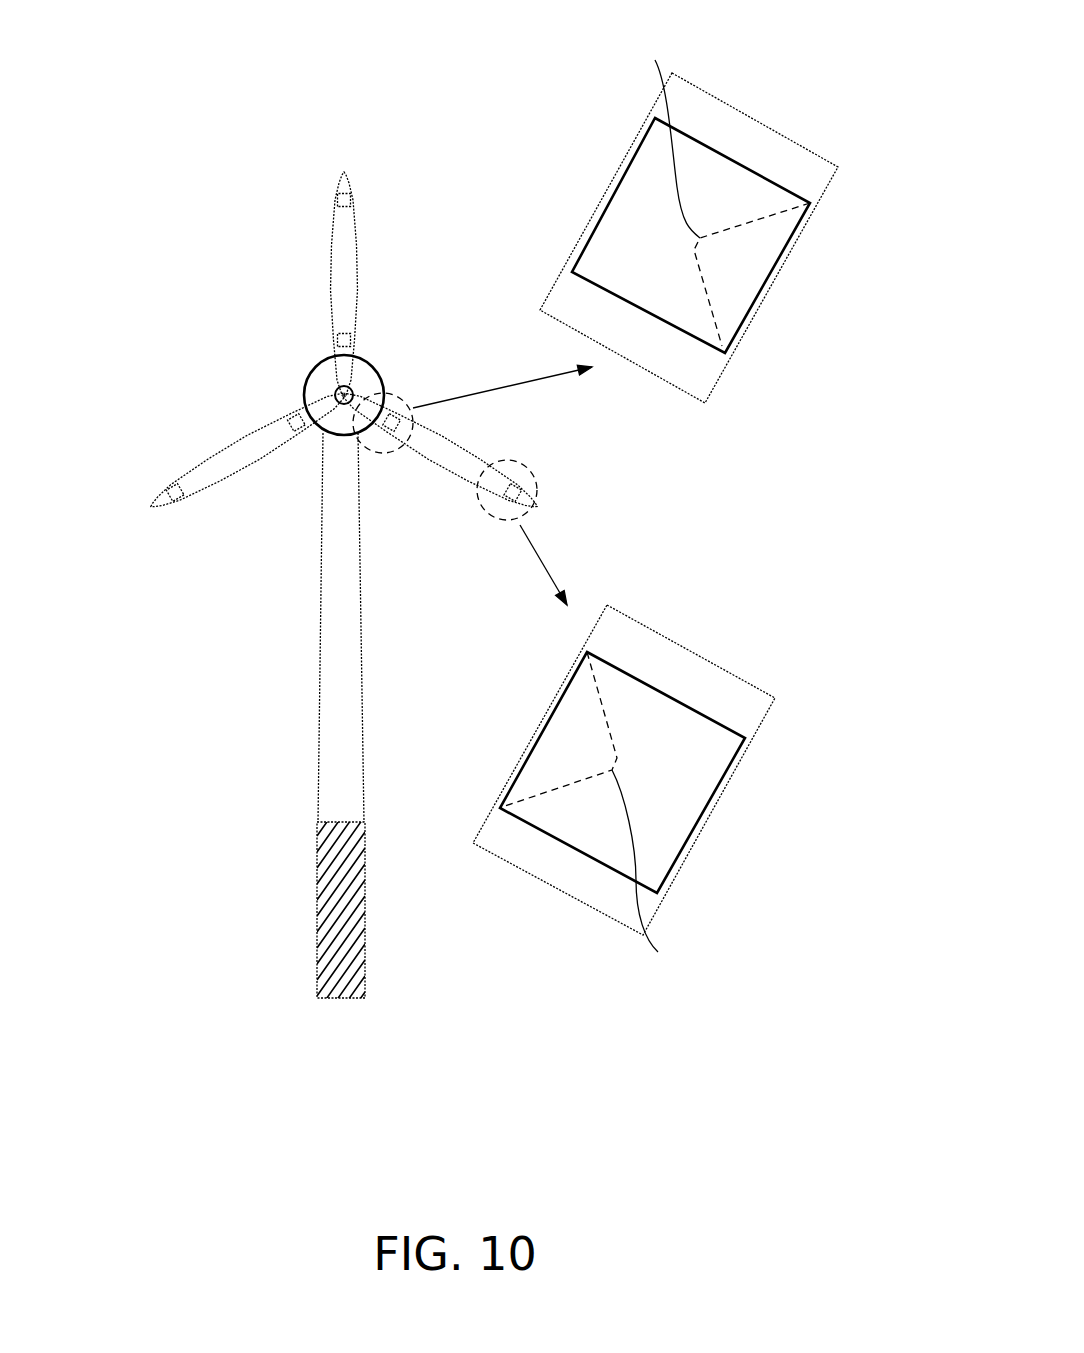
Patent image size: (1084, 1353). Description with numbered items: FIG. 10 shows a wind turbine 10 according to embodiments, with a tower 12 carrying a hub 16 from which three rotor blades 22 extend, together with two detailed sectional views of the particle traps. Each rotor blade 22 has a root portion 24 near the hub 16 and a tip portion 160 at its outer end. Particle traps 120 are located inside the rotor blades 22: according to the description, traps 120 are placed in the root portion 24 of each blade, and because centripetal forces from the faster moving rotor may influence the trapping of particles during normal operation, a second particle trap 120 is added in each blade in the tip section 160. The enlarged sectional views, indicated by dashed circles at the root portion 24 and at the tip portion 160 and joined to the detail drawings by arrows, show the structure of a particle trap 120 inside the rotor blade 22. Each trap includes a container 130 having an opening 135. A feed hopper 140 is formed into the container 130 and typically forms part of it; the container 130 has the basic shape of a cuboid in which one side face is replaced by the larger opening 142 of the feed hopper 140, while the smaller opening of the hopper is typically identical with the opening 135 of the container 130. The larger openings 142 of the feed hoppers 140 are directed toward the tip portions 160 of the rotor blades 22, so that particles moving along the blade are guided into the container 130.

The wind turbine 10 is at (171, 199).
The tower 12 is at (318, 708).
The hub 16 is at (312, 378).
The rotor blade 22 is at (333, 262).
The root portion 24 is at (333, 345).
The particle trap 120 is at (358, 337).
The container 130 is at (647, 185).
The opening 135 is at (656, 506).
The feed hopper 140 is at (715, 322).
The larger opening 142 is at (763, 297).
The tip portion 160 is at (347, 174).